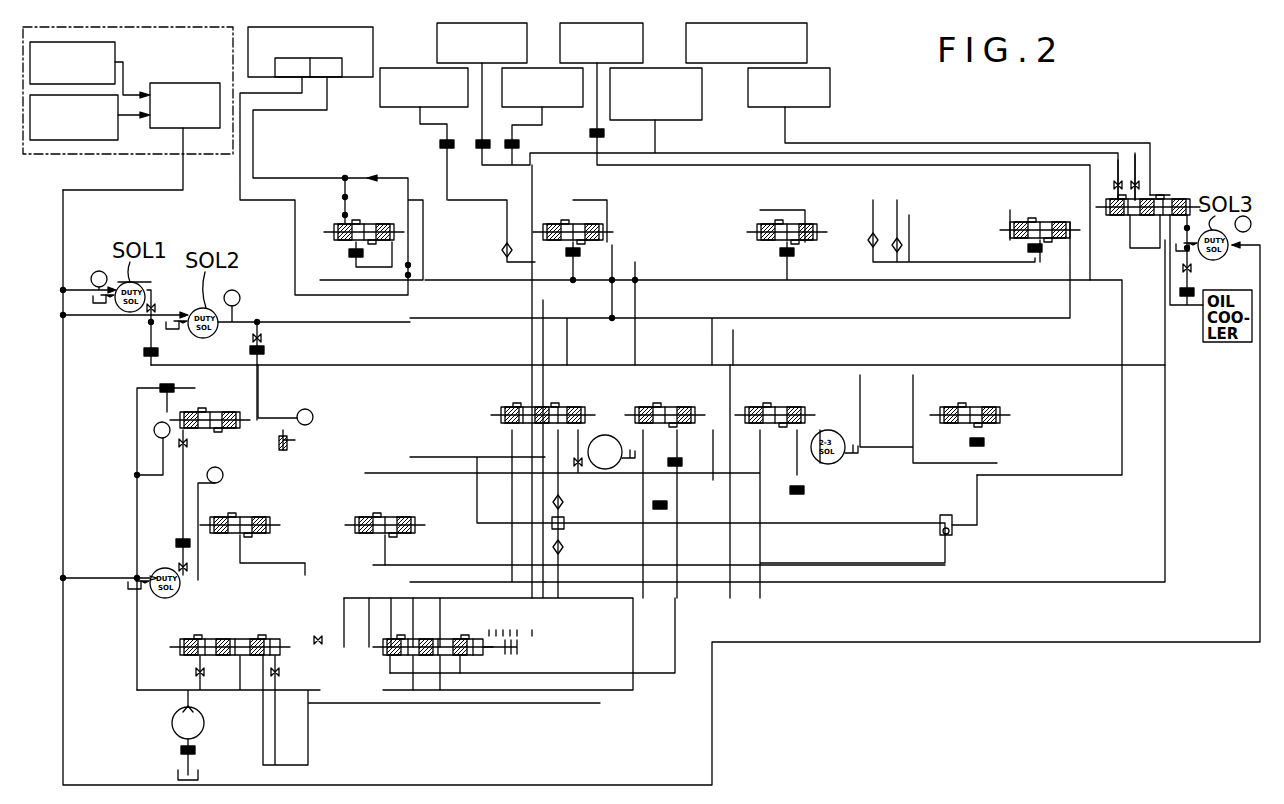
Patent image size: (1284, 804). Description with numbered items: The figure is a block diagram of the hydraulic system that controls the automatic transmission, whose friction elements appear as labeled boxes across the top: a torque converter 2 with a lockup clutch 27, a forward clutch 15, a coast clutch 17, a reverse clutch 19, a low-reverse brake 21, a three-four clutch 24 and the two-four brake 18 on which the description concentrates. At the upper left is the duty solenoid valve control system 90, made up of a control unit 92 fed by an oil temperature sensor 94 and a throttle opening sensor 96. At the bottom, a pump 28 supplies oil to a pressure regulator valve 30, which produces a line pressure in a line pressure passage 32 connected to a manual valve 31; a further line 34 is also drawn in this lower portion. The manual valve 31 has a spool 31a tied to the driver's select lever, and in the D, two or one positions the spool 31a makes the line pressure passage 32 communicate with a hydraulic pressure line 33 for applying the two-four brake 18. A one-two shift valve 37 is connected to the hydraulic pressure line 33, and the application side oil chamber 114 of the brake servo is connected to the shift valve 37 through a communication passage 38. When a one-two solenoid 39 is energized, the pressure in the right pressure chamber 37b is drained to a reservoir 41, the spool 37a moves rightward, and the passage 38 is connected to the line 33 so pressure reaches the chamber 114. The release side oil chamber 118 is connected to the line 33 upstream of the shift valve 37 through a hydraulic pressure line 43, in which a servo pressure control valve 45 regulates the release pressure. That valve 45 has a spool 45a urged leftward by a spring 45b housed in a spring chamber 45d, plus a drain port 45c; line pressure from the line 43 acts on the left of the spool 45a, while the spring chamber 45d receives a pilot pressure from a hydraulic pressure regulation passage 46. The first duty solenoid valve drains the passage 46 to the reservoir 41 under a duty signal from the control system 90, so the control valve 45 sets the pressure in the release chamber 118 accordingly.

The torque converter 2 is at (735, 23).
The forward clutch 15 is at (475, 23).
The coast clutch 17 is at (548, 68).
The 2-4 brake 18 is at (313, 27).
The reverse clutch 19 is at (404, 68).
The low-reverse brake 21 is at (666, 68).
The 3-4 clutch 24 is at (622, 23).
The lockup clutch 27 is at (830, 92).
The pump 28 is at (204, 723).
The pressure regulator valve 30 is at (283, 630).
The manual valve 31 is at (528, 658).
The spool 31a is at (375, 665).
The line pressure passage 32 is at (500, 690).
The hydraulic pressure line 33 is at (545, 548).
The passage 34 is at (655, 673).
The 1-2 shift valve 37 is at (556, 396).
The spool 37a is at (520, 408).
The right pressure chamber 37b is at (590, 405).
The communication passage 38 is at (567, 340).
The 1-2 solenoid 39 is at (610, 470).
The reservoir 41 is at (116, 310).
The hydraulic pressure line 43 is at (345, 197).
The servo pressure control valve 45 is at (380, 205).
The spool 45a is at (335, 228).
The spring 45b is at (425, 205).
The drain port 45c is at (408, 255).
The spring chamber 45d is at (395, 230).
The hydraulic pressure regulation passage 46 is at (408, 290).
The duty solenoid valve control system 90 is at (115, 158).
The control unit 92 is at (187, 83).
The oil temperature sensor 94 is at (62, 140).
The throttle opening sensor 96 is at (115, 50).
The application side oil chamber 114 is at (290, 70).
The release side oil chamber 118 is at (338, 70).